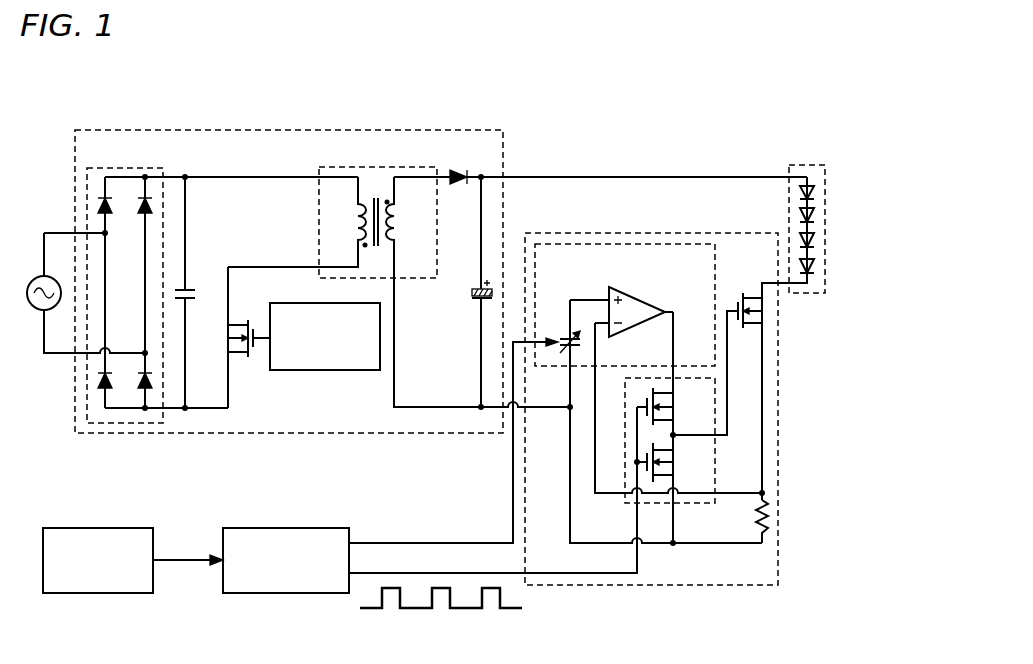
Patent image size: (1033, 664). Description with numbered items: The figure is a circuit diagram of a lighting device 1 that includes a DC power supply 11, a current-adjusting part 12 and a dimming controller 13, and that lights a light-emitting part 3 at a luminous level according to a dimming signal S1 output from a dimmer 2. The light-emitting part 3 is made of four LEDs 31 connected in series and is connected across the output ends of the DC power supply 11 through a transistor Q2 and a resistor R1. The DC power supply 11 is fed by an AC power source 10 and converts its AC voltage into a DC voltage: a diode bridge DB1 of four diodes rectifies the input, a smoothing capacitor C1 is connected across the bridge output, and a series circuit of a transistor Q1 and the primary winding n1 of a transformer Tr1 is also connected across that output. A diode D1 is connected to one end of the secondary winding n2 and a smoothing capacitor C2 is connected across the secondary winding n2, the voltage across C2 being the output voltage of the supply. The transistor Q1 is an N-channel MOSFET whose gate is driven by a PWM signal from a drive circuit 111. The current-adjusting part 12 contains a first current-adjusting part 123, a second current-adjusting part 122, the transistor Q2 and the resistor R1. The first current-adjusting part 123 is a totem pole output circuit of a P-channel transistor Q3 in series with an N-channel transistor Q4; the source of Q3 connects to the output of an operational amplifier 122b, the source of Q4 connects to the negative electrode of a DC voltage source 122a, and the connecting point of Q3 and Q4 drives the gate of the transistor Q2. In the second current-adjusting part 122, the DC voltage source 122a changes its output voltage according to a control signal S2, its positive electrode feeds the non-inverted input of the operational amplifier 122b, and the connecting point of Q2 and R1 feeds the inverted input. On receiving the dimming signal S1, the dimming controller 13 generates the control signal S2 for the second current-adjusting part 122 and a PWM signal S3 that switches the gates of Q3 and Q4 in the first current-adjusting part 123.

The lighting device 1 is at (541, 127).
The dimmer 2 is at (88, 528).
The light-emitting part 3 is at (797, 164).
The AC power source 10 is at (38, 278).
The DC power supply 11 is at (132, 129).
The current-adjusting part 12 is at (558, 232).
The dimming controller 13 is at (294, 528).
The LED 31 is at (817, 217).
The drive circuit 111 is at (323, 372).
The second current-adjusting part 122 is at (672, 244).
The DC voltage source 122a is at (562, 335).
The operational amplifier 122b is at (641, 313).
The first current-adjusting part 123 is at (532, 442).
The diode bridge DB1 is at (166, 175).
The transformer Tr1 is at (399, 287).
The primary winding n1 is at (298, 222).
The secondary winding n2 is at (478, 292).
The diode D1 is at (600, 160).
The smoothing capacitor C1 is at (198, 292).
The smoothing capacitor C2 is at (469, 293).
The transistor Q1 is at (232, 337).
The transistor Q2 is at (740, 381).
The transistor Q3 is at (673, 406).
The transistor Q4 is at (673, 462).
The resistor R1 is at (746, 516).
The dimming signal S1 is at (188, 546).
The control signal S2 is at (453, 442).
The PWM signal S3 is at (370, 561).